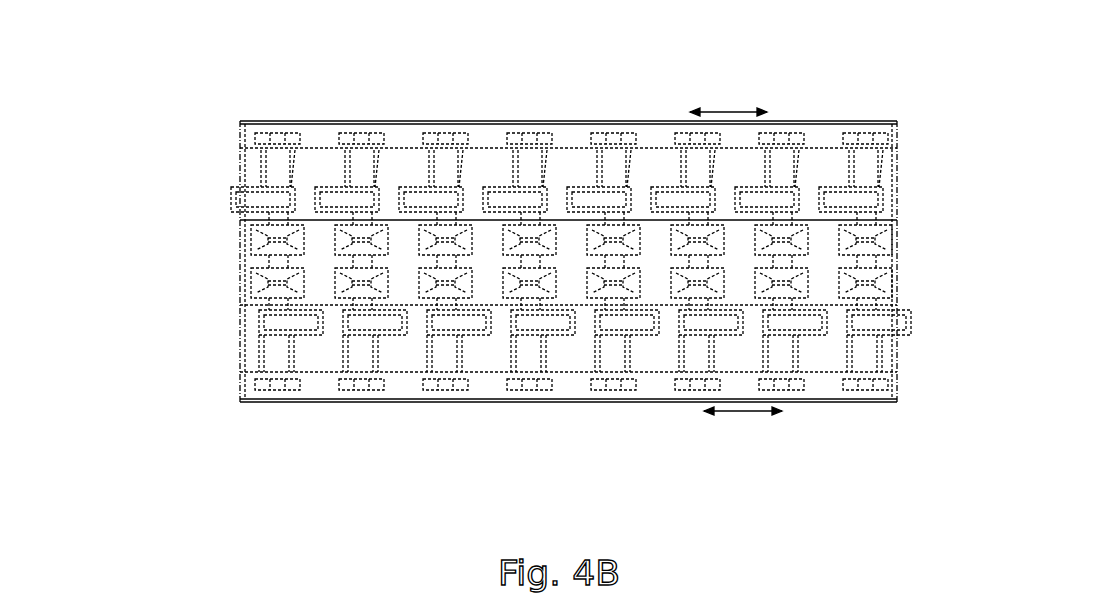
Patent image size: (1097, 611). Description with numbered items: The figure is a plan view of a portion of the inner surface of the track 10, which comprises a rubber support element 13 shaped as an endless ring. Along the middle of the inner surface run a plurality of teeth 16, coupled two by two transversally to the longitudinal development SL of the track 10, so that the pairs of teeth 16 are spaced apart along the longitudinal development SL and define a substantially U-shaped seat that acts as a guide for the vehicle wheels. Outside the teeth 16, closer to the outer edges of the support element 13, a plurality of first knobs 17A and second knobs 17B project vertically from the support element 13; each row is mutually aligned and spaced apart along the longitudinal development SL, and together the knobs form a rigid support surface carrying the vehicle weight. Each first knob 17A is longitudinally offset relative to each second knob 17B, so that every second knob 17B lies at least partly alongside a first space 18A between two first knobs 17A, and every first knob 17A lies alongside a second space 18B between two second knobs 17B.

The track 10 is at (158, 97).
The support element 13 is at (243, 376).
The teeth 16 is at (258, 290).
The first knobs 17A is at (280, 318).
The second knobs 17B is at (270, 200).
The first space 18A is at (248, 318).
The second space 18B is at (303, 203).
The longitudinal development SL is at (736, 264).